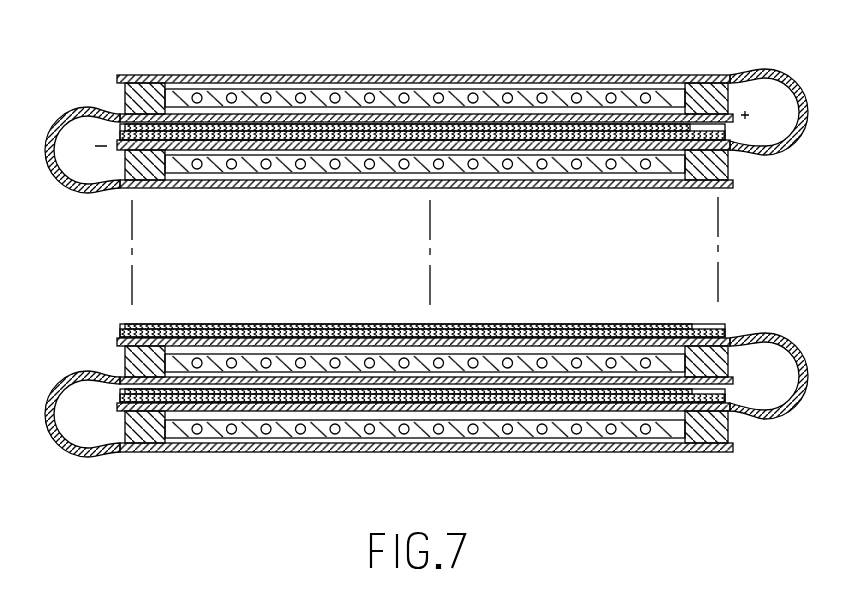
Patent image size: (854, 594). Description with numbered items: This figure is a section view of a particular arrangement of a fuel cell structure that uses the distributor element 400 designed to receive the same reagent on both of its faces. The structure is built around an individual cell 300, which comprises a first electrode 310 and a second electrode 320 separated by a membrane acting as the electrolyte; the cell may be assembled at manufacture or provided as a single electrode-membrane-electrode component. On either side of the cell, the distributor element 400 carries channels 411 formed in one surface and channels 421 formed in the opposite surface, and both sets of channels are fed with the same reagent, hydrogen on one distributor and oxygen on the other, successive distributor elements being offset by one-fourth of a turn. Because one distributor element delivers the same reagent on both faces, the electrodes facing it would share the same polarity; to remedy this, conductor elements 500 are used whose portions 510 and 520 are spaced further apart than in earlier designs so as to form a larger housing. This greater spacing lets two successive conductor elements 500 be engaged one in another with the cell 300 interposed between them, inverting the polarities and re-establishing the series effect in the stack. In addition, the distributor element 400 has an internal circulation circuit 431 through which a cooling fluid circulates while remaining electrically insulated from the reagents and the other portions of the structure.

The individual cell 300 is at (733, 132).
The first electrode 310 is at (660, 132).
The second electrode 320 is at (731, 165).
The distributor element 400 is at (731, 96).
The channels 411 is at (253, 92).
The channels 421 is at (385, 110).
The internal circulation circuit 431 is at (474, 96).
The conductor element 500 is at (783, 66).
The portion of conductor element 510 is at (146, 75).
The portion of conductor element 520 is at (147, 172).